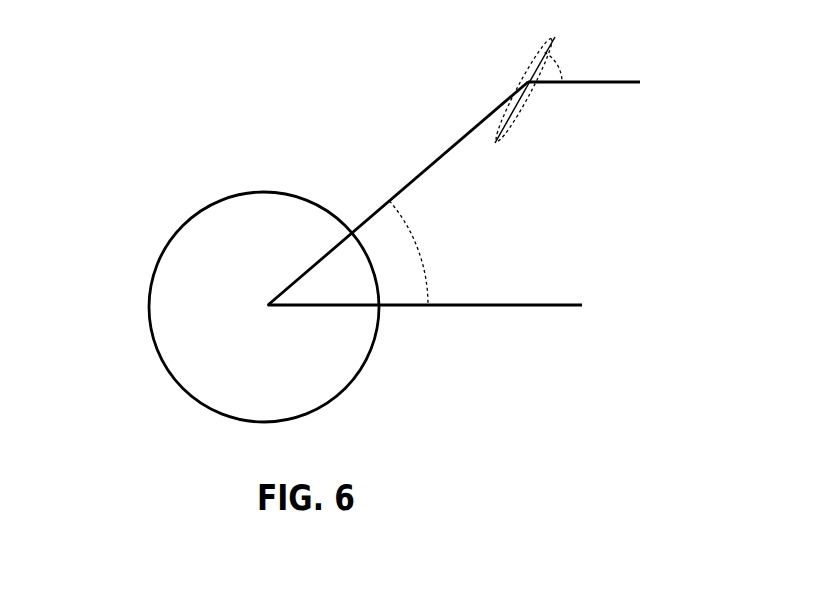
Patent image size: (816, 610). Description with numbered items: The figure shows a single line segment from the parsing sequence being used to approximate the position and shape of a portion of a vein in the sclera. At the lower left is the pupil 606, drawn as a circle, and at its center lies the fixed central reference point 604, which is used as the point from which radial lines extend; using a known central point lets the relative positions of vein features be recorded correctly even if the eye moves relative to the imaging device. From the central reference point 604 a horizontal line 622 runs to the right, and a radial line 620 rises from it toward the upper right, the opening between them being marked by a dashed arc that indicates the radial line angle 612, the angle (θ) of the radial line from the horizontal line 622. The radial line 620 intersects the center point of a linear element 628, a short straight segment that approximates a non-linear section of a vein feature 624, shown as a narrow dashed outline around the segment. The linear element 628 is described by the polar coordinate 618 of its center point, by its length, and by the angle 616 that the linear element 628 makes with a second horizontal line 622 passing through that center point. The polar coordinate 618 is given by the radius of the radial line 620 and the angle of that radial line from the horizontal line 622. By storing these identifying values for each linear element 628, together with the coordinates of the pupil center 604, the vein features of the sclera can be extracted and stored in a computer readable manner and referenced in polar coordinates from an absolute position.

The central reference point 604 is at (267, 305).
The pupil 606 is at (152, 275).
The angle 612 is at (417, 252).
The angle of the linear element 616 is at (552, 55).
The polar coordinate of the center point 618 is at (528, 82).
The radial line 620 is at (457, 143).
The horizontal line 622 is at (467, 306).
The vein feature 624 is at (525, 110).
The linear element 628 is at (552, 42).